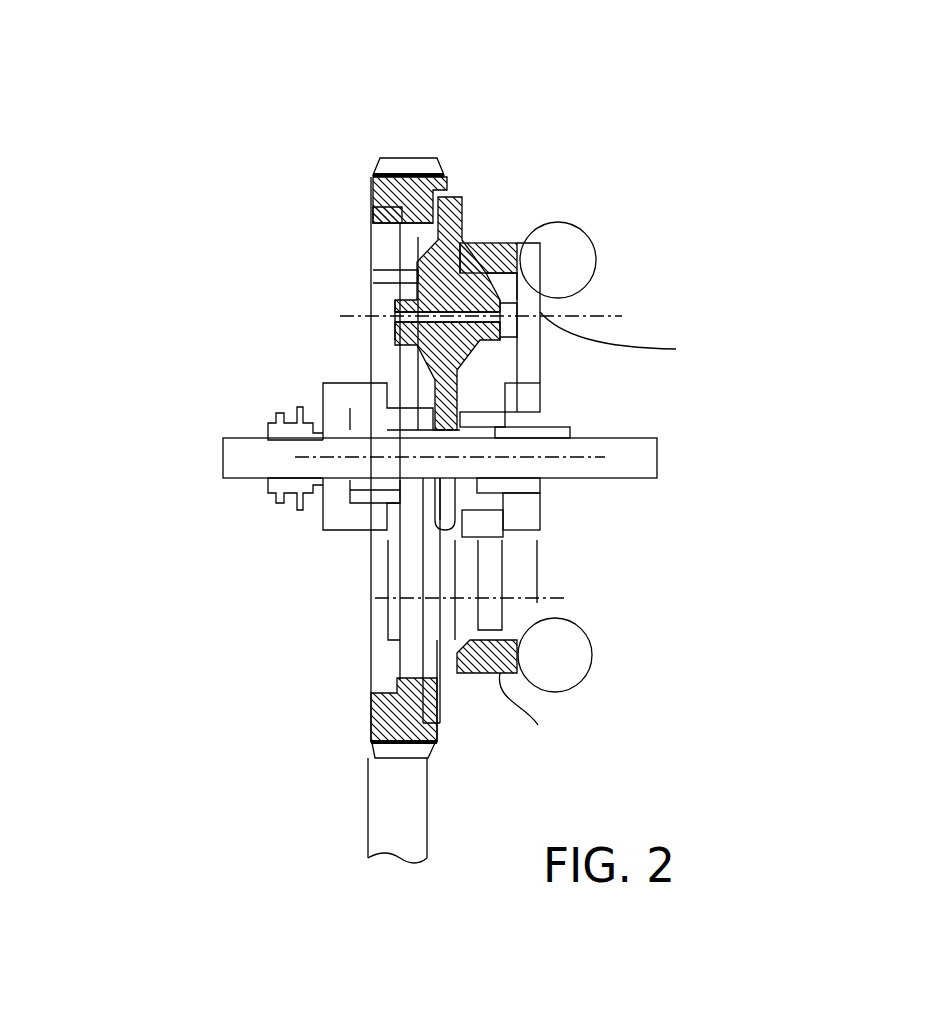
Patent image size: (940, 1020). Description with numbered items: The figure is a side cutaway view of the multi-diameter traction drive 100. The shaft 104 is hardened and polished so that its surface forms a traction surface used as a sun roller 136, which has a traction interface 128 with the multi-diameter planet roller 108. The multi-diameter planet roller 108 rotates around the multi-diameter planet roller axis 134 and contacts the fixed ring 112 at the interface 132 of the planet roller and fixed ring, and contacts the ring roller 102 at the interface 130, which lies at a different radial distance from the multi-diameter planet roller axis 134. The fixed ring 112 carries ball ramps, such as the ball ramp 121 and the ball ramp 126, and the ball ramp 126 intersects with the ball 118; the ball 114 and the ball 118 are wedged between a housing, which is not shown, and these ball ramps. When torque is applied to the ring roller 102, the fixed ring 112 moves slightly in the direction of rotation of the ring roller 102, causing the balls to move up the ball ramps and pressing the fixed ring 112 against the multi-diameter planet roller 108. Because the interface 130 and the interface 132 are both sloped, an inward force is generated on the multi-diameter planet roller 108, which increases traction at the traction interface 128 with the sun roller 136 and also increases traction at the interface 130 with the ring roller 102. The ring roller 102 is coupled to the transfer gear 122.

The multi-diameter traction drive 100 is at (560, 162).
The ring roller 102 is at (408, 164).
The shaft 104 is at (600, 473).
The multi-diameter planet roller 108 is at (460, 190).
The fixed ring 112 is at (458, 783).
The ball 114 is at (560, 263).
The ball 118 is at (567, 693).
The ball ramp 121 is at (650, 348).
The transfer gear 122 is at (390, 770).
The ball ramp 126 is at (541, 722).
The traction interface 128 is at (447, 435).
The interface of planet roller and ring roller 130 is at (374, 209).
The interface of planet roller and fixed ring 132 is at (375, 283).
The multi-diameter planet roller axis 134 is at (597, 312).
The sun roller 136 is at (457, 462).